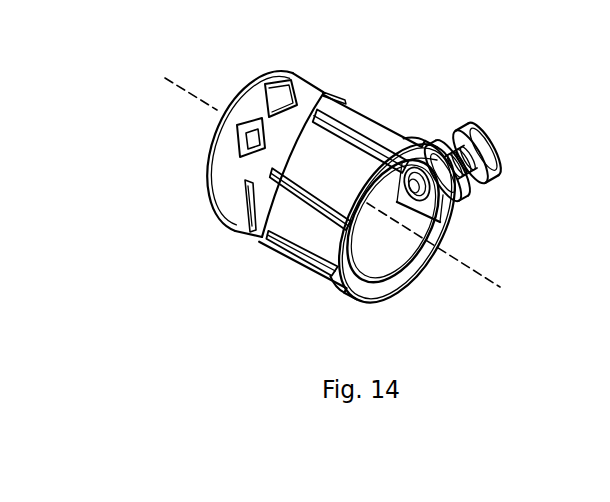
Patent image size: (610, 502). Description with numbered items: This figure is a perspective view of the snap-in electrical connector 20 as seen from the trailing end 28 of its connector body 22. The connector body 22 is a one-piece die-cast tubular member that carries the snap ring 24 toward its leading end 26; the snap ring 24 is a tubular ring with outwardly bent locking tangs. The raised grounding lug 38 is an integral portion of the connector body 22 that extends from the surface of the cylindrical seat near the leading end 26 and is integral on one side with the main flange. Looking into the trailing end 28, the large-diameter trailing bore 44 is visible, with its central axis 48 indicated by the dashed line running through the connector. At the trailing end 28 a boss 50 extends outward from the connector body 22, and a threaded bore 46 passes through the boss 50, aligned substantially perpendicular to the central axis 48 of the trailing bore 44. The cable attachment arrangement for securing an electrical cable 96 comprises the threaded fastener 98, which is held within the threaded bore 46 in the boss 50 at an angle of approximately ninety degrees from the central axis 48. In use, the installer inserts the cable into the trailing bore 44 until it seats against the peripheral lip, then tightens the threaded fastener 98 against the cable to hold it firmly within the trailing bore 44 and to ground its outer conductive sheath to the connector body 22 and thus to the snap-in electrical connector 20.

The snap-in electrical connector 20 is at (142, 86).
The connector body 22 is at (341, 166).
The snap ring 24 is at (227, 183).
The leading end 26 is at (212, 131).
The trailing end 28 is at (408, 283).
The raised grounding lug 38 is at (250, 192).
The trailing bore 44 is at (394, 258).
The threaded bore 46 is at (438, 207).
The central axis 48 is at (466, 268).
The boss 50 is at (441, 151).
The electrical cable 96 is at (517, 174).
The threaded fastener 98 is at (498, 146).